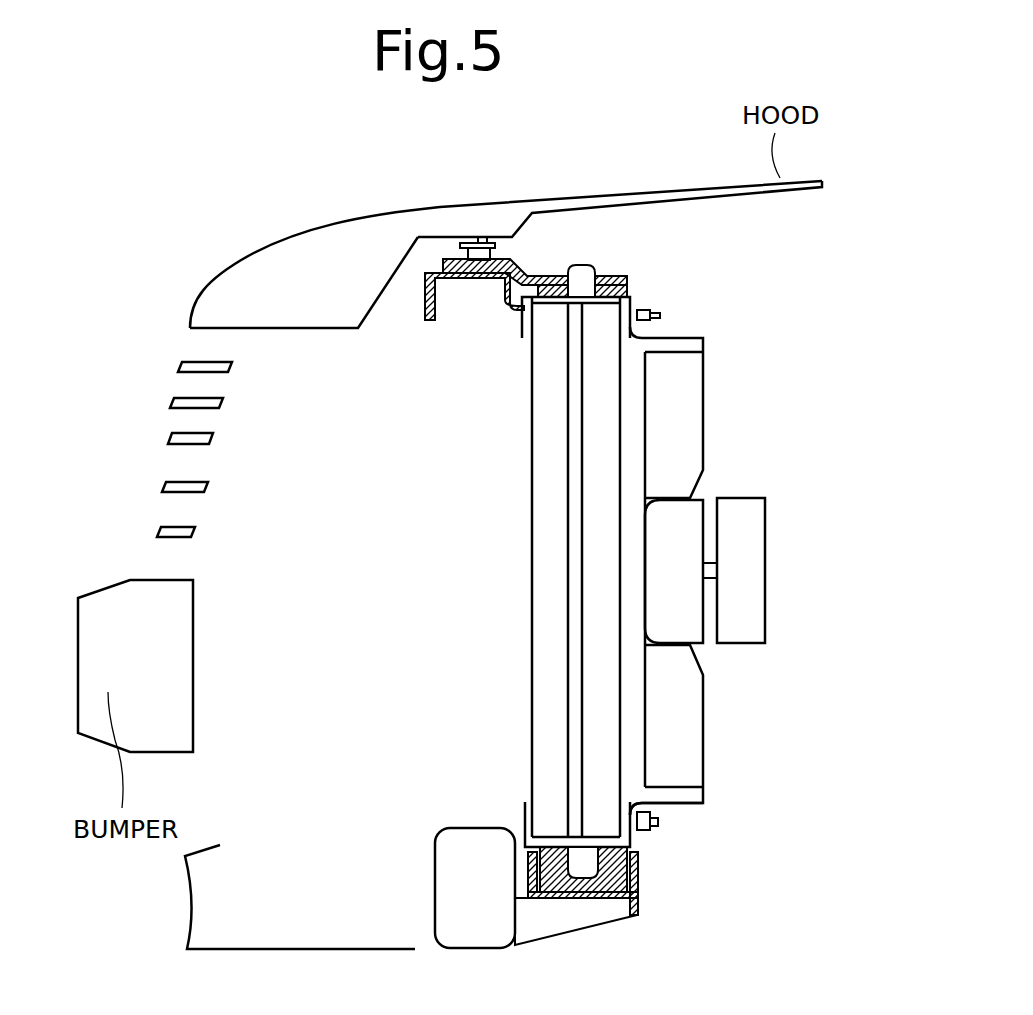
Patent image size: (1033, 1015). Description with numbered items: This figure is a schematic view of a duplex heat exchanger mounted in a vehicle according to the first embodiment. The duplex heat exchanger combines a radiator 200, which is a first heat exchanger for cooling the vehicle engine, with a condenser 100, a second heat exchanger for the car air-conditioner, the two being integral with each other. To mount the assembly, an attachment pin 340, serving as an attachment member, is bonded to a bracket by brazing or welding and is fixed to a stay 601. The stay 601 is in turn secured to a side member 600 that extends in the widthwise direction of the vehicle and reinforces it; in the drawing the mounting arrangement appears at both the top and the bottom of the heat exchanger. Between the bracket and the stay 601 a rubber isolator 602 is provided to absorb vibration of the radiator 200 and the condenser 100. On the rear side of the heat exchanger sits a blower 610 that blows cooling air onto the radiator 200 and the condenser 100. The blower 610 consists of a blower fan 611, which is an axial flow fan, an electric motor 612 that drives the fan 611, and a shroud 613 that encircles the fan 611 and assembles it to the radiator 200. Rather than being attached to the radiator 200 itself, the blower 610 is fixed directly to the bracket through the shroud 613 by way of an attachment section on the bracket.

The condenser 100 is at (550, 605).
The radiator 200 is at (600, 523).
The attachment pin 340 is at (581, 264).
The side member 600 is at (427, 272).
The stay 601 is at (522, 283).
The rubber isolator 602 is at (628, 292).
The blower 610 is at (711, 498).
The blower fan 611 is at (690, 727).
The electric motor 612 is at (766, 565).
The shroud 613 is at (688, 805).